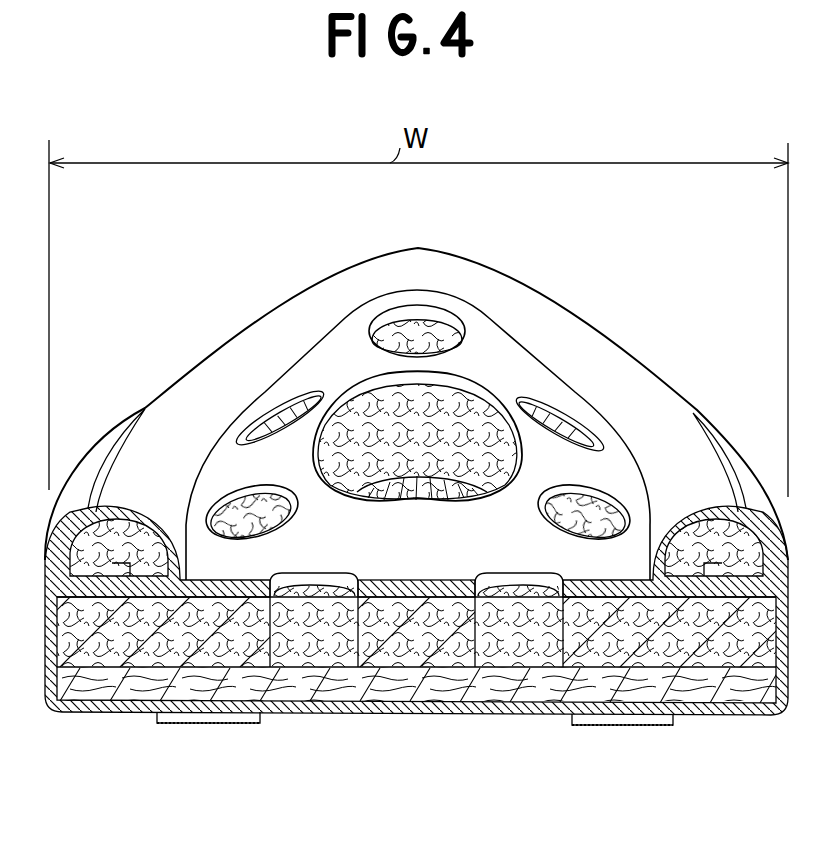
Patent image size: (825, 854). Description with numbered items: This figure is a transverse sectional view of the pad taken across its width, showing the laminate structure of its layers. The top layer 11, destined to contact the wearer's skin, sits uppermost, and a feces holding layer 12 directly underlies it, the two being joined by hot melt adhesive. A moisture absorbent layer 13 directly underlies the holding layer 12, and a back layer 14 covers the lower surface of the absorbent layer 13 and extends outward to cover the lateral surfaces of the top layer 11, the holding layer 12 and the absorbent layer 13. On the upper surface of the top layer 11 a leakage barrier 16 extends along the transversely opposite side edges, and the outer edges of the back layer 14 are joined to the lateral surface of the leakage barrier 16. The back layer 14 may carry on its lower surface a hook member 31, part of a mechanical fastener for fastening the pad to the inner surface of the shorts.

The top layer 11 is at (422, 556).
The feces holding layer 12 is at (408, 655).
The moisture absorbent layer 13 is at (313, 693).
The back layer 14 is at (90, 708).
The leakage barrier 16 is at (118, 465).
The hook member 31 is at (205, 713).